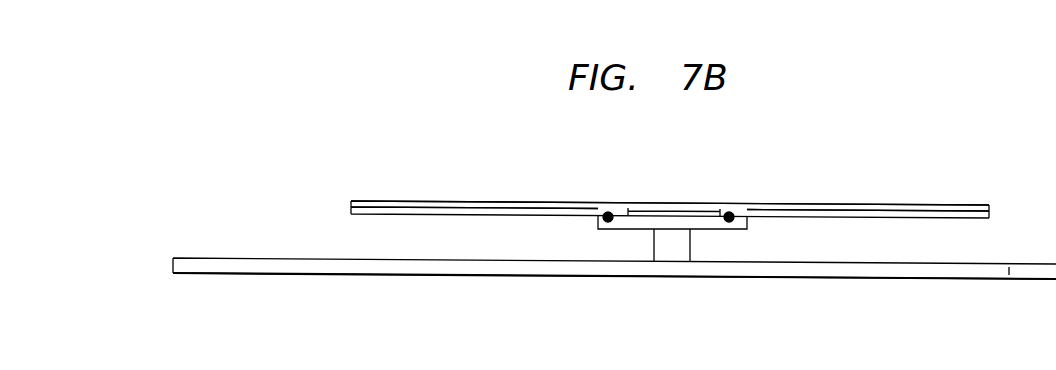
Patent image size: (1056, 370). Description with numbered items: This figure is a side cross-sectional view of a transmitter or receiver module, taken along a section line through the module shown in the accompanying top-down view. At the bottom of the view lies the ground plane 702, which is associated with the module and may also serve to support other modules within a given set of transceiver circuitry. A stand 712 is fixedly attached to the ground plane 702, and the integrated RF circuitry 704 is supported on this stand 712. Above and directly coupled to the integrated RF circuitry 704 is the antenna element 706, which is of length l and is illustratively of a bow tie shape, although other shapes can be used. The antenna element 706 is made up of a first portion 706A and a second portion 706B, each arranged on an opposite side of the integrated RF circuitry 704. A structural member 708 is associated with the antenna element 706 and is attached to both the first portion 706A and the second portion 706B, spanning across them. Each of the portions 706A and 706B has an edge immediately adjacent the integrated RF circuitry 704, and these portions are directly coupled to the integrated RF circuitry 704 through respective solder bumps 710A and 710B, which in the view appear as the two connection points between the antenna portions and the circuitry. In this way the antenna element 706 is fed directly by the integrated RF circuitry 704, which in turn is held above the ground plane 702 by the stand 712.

The ground plane 702 is at (304, 266).
The integrated RF circuitry 704 is at (665, 215).
The antenna element 706 is at (350, 211).
The first portion of the antenna element 706A is at (403, 215).
The second portion of the antenna element 706B is at (902, 218).
The structural member 708 is at (409, 201).
The solder bump 710A is at (606, 212).
The solder bump 710B is at (734, 211).
The stand 712 is at (654, 243).